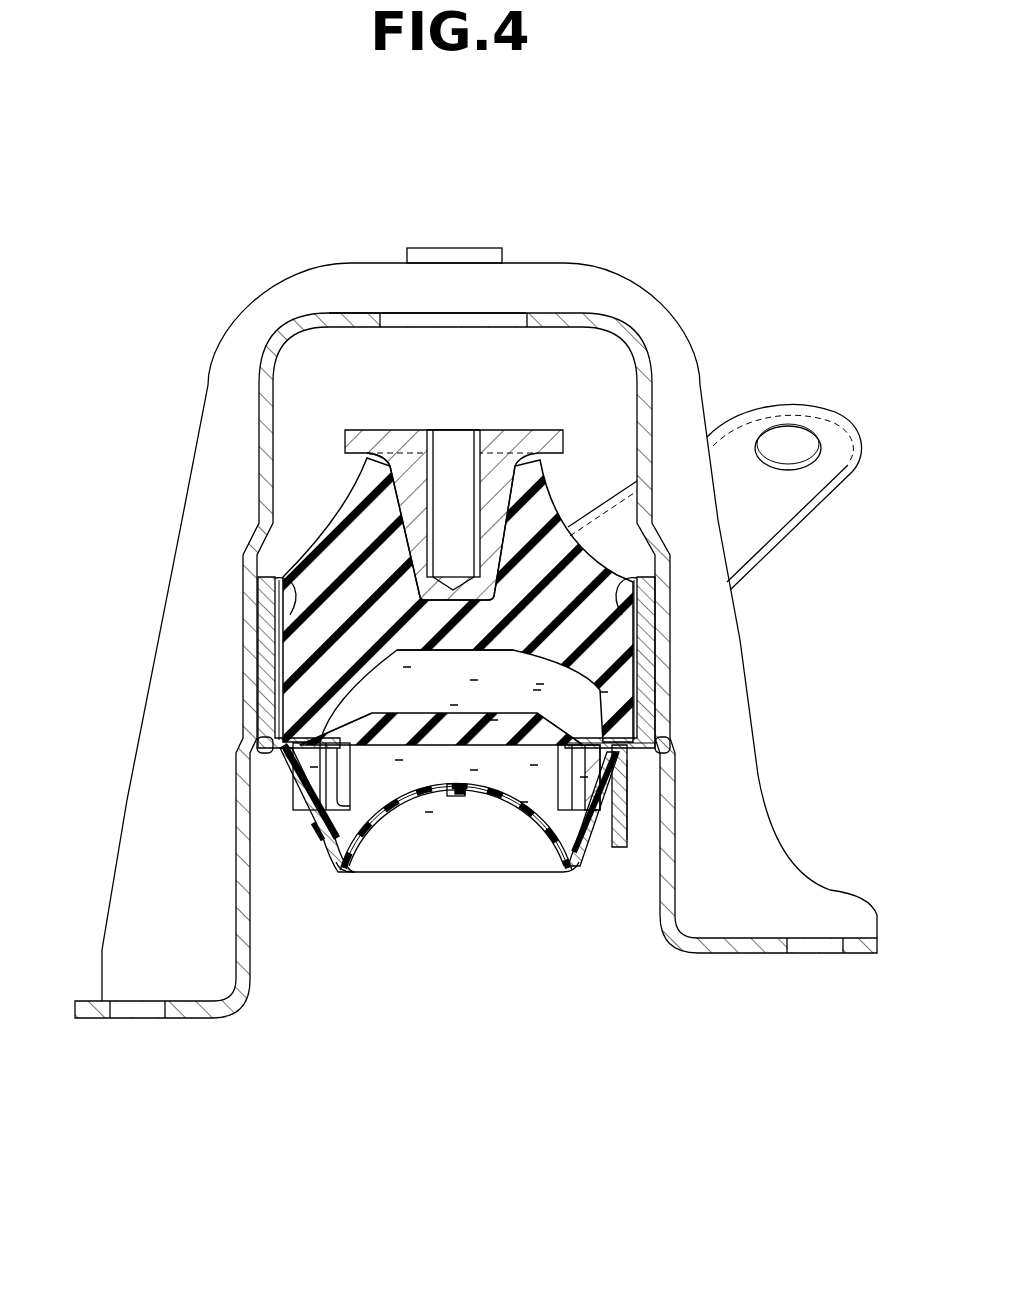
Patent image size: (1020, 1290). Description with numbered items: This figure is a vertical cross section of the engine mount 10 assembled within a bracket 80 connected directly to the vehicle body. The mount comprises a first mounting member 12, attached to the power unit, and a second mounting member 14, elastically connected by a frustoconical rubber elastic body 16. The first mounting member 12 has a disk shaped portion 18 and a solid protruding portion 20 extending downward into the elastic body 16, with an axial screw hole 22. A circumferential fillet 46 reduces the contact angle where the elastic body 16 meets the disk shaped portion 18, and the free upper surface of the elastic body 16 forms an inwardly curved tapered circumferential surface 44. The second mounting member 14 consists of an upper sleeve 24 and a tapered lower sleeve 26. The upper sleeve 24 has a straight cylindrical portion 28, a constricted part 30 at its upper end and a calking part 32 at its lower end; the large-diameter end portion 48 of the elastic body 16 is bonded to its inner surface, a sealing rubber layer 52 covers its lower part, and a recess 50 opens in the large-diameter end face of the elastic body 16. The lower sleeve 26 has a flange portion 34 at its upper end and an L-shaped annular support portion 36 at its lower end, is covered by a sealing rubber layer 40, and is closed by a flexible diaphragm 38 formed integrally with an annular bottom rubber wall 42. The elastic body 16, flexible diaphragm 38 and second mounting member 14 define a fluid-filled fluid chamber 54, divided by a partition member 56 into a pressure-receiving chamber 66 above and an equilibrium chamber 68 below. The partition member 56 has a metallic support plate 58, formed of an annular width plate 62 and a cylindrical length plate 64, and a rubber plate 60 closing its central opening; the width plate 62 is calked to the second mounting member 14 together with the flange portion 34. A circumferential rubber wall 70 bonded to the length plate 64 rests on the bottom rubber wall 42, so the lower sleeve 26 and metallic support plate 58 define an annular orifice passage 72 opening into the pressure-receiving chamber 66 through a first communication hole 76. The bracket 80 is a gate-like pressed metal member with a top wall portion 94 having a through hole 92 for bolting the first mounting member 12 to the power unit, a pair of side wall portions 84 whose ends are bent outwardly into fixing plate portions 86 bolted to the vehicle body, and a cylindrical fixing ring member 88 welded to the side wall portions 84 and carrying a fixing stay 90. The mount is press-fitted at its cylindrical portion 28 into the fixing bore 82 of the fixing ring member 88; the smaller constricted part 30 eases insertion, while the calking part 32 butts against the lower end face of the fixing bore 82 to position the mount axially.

The engine mount 10 is at (406, 420).
The first mounting member 12 is at (548, 424).
The second mounting member 14 is at (74, 712).
The elastic body 16 is at (377, 557).
The disk shaped portion 18 is at (370, 437).
The protruding portion 20 is at (500, 510).
The screw hole 22 is at (462, 447).
The upper sleeve 24 is at (268, 694).
The lower sleeve 26 is at (276, 797).
The cylindrical portion 28 is at (640, 697).
The constricted part 30 is at (293, 600).
The calking part 32 is at (628, 780).
The flange portion 34 is at (256, 766).
The annular support portion 36 is at (597, 835).
The flexible diaphragm 38 is at (403, 875).
The sealing rubber layer 40 is at (628, 800).
The annular bottom rubber wall 42 is at (343, 862).
The tapered circumferential surface 44 is at (592, 515).
The circumferential fillet 46 is at (370, 463).
The large-diameter end portion 48 is at (295, 643).
The recess 50 is at (535, 695).
The sealing rubber layer 52 is at (655, 747).
The fluid chamber 54 is at (540, 1016).
The partition member 56 is at (415, 710).
The metallic support plate 58 is at (317, 633).
The rubber plate 60 is at (463, 720).
The width plate 62 is at (305, 730).
The length plate 64 is at (352, 780).
The pressure-receiving chamber 66 is at (453, 797).
The equilibrium chamber 68 is at (527, 800).
The circumferential rubber wall 70 is at (623, 803).
The orifice passage 72 is at (303, 818).
The first communication hole 76 is at (597, 740).
The bracket 80 is at (257, 957).
The fixing bore 82 is at (640, 668).
The side wall portions 84 is at (240, 898).
The fixing plate portion 86 is at (197, 1010).
The fixing ring member 88 is at (655, 630).
The fixing stay 90 is at (773, 522).
The through hole 92 is at (517, 313).
The top wall portion 94 is at (365, 318).